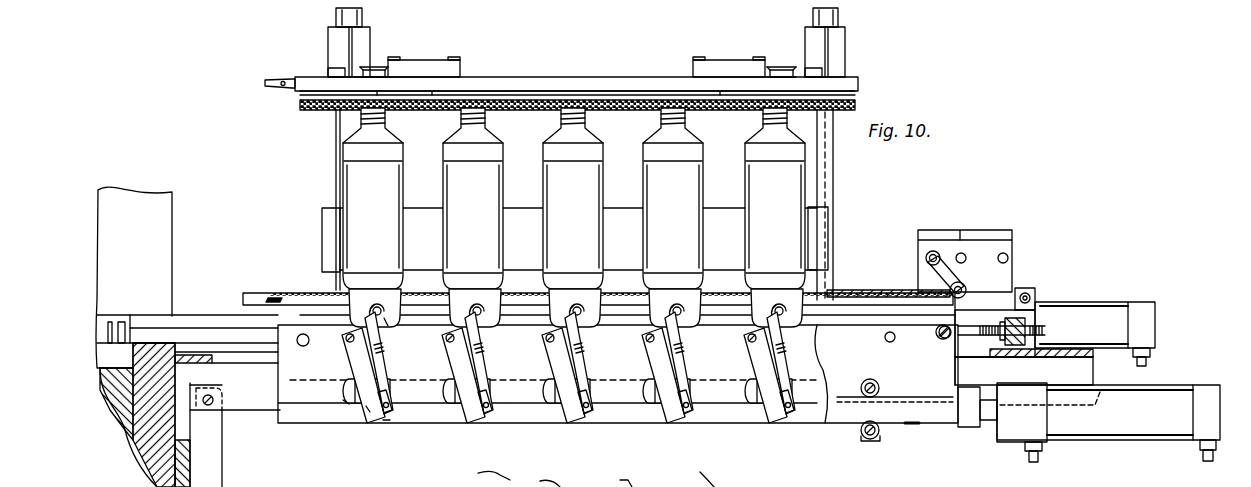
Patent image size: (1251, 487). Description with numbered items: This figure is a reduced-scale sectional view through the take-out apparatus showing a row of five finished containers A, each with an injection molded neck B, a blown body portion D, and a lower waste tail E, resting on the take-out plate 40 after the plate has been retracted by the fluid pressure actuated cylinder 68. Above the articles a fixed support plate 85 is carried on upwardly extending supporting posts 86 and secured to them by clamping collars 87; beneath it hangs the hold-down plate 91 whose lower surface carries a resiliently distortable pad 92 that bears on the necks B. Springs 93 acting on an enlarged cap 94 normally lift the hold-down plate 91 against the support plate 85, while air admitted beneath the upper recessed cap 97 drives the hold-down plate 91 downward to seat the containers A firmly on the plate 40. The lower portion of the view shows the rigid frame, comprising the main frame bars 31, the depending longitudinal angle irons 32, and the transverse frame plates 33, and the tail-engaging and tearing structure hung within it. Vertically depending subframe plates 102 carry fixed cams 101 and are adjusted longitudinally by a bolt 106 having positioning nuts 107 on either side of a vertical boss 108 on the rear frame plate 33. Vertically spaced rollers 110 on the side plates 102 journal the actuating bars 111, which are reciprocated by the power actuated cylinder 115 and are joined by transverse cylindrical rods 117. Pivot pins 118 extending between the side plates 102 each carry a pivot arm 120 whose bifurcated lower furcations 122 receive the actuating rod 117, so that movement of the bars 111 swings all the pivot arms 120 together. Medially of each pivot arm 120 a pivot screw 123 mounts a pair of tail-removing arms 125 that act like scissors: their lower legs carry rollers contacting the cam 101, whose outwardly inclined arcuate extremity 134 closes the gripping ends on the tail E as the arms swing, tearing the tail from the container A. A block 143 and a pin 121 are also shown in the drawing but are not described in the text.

The main frame bar 31 is at (222, 340).
The longitudinal angle iron 32 is at (253, 402).
The transverse frame plate 33 is at (191, 352).
The take-out plate 40 is at (857, 291).
The fluid pressure actuated cylinder 68 is at (1112, 303).
The fixed support plate 85 is at (858, 84).
The supporting post 86 is at (338, 126).
The clamping collar 87 is at (363, 42).
The hold-down plate 91 is at (548, 94).
The resiliently distortable pad 92 is at (618, 100).
The spring 93 is at (372, 77).
The enlarged cap 94 is at (373, 67).
The upper recessed cap 97 is at (420, 60).
The fixed cam 101 is at (398, 392).
The subframe plate 102 is at (606, 396).
The bolt 106 is at (1040, 331).
The positioning nut 107 is at (1012, 320).
The vertical boss 108 is at (1013, 352).
The roller 110 is at (879, 388).
The actuating bar 111 is at (912, 413).
The power actuated cylinder 115 is at (1172, 386).
The transverse cylindrical rod 117 is at (394, 411).
The pivot pin 118 is at (343, 344).
The pivot arm 120 is at (345, 364).
The pin 121 is at (366, 407).
The furcation 122 is at (383, 421).
The pivot screw 123 is at (388, 328).
The tail-removing arm 125 is at (398, 364).
The arcuate longitudinal extremity 134 is at (343, 402).
The block 143 is at (829, 240).
The container A is at (540, 194).
The neck B is at (486, 122).
The blown body portion D is at (540, 240).
The tail E is at (556, 300).